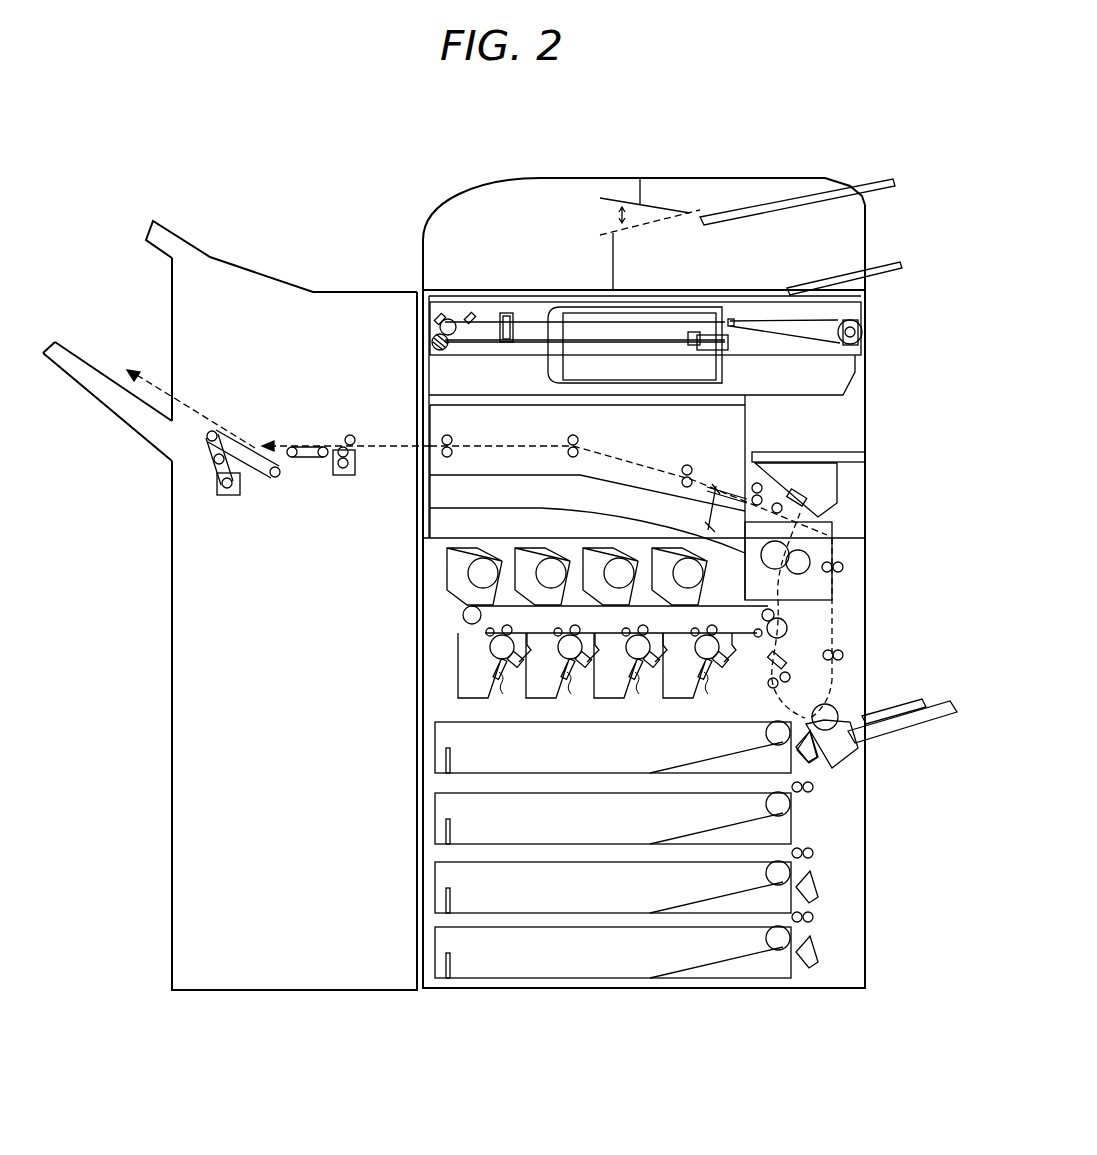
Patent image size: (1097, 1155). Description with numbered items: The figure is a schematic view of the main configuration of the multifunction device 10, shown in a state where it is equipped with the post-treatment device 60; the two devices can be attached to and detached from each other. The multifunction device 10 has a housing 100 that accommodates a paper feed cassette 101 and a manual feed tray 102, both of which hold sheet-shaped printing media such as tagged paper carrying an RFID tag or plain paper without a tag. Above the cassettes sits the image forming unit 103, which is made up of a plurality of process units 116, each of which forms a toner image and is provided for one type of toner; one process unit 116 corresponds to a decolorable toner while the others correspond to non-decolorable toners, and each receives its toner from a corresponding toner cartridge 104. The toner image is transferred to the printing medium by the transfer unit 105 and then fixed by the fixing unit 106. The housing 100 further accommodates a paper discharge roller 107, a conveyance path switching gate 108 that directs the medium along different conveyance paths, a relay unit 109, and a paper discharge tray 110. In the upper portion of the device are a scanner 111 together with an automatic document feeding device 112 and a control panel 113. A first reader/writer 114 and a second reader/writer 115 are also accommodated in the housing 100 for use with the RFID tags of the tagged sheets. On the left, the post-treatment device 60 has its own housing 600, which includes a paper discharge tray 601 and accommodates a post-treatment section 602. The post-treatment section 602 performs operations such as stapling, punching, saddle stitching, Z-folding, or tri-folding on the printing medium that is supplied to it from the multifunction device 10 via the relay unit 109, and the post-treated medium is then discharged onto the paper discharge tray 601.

The multifunction device 10 is at (826, 168).
The post-treatment device 60 is at (277, 258).
The housing 100 is at (607, 990).
The paper feed cassette 101 is at (783, 935).
The manual feed tray 102 is at (933, 700).
The image forming unit 103 is at (447, 667).
The toner cartridge 104 is at (448, 570).
The transfer unit 105 is at (467, 620).
The fixing unit 106 is at (830, 522).
The paper discharge roller 107 is at (762, 466).
The conveyance path switching gate 108 is at (713, 484).
The relay unit 109 is at (522, 423).
The paper discharge tray 110 is at (597, 517).
The scanner 111 is at (866, 292).
The automatic document feeding device 112 is at (674, 192).
The control panel 113 is at (457, 290).
The first reader/writer 114 is at (785, 658).
The second reader/writer 115 is at (800, 492).
The process unit 116 is at (610, 691).
The housing 600 is at (300, 990).
The paper discharge tray 601 is at (90, 393).
The post-treatment section 602 is at (231, 497).